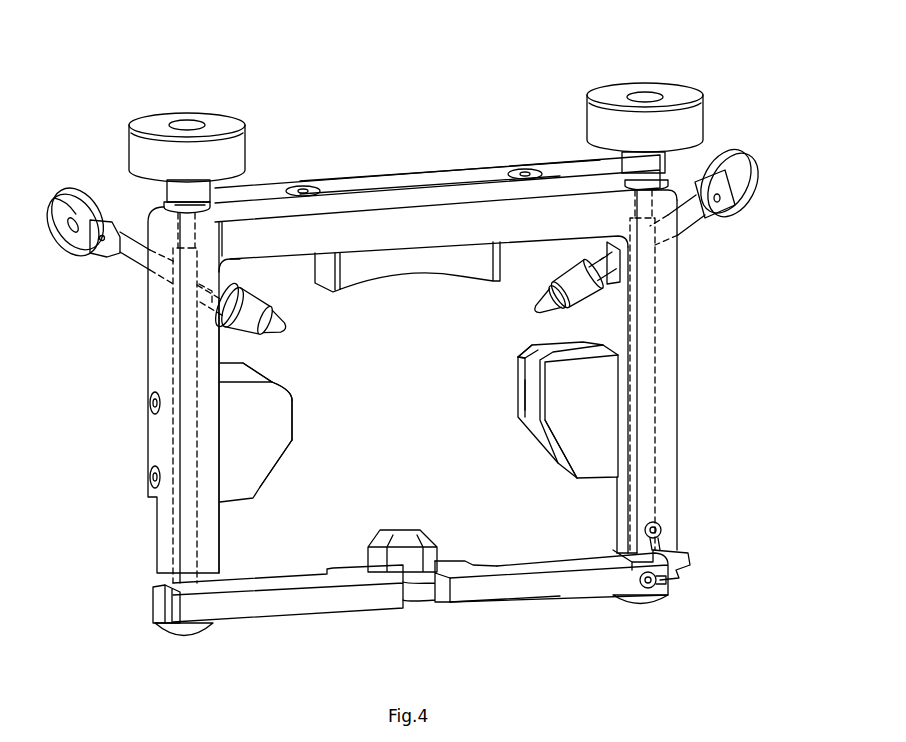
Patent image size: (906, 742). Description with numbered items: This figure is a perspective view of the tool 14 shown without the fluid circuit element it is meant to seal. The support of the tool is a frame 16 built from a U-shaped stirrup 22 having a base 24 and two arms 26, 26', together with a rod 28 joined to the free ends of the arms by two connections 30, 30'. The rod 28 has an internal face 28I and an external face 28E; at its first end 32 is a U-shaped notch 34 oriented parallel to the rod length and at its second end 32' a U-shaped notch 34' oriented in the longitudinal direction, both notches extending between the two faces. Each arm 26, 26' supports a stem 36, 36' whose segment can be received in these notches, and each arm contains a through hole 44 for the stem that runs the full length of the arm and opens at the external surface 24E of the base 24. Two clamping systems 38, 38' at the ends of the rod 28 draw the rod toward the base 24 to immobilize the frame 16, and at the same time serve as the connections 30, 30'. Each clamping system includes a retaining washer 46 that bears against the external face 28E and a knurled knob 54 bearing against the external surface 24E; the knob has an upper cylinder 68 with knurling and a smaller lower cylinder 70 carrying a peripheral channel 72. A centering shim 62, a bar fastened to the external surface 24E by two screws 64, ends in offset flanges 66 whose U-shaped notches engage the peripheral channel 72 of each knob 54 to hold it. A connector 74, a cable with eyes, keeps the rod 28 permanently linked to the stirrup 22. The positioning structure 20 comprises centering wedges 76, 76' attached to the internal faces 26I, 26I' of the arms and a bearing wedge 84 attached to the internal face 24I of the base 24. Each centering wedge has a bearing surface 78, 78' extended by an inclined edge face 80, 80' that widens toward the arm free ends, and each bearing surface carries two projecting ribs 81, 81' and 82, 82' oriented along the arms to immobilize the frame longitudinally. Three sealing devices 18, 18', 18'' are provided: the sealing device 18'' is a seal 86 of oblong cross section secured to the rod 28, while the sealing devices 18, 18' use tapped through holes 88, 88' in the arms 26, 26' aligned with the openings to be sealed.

The tool 14 is at (285, 120).
The frame 16 is at (668, 198).
The sealing device 18 is at (119, 235).
The sealing device 18' is at (716, 195).
The sealing device 18'' is at (425, 486).
The positioning structure 20 is at (406, 330).
The U-shaped stirrup 22 is at (368, 176).
The base 24 is at (417, 212).
The external surface of the base 24E is at (273, 215).
The internal face of the base 24I is at (256, 262).
The first arm 26 is at (148, 395).
The second arm 26' is at (686, 371).
The internal face of the first arm 26I is at (248, 436).
The internal face of the second arm 26I' is at (585, 515).
The rod 28 is at (468, 600).
The internal face of the rod 28I is at (498, 568).
The external face of the rod 28E is at (510, 602).
The connection 30 is at (92, 624).
The connection 30' is at (707, 630).
The first end of the rod 32 is at (288, 620).
The second end of the rod 32' is at (559, 602).
The U-shaped notch 34 is at (141, 588).
The U-shaped notch 34' is at (615, 543).
The stem 36 is at (134, 599).
The stem 36' is at (693, 534).
The clamping system 38 is at (158, 124).
The clamping system 38' is at (665, 103).
The through hole 44 is at (187, 333).
The retaining washer 46 is at (163, 627).
The knurled knob 54 is at (204, 117).
The centering shim 62 is at (343, 182).
The screws 64 is at (303, 186).
The flange 66 is at (212, 190).
The upper cylinder 68 is at (131, 130).
The lower cylinder 70 is at (167, 186).
The peripheral channel 72 is at (166, 198).
The connector 74 is at (690, 562).
The centering wedge 76 is at (271, 436).
The centering wedge 76' is at (549, 410).
The bearing surface 78 is at (301, 379).
The bearing surface 78' is at (501, 345).
The inclined edge face 80 is at (292, 463).
The inclined edge face 80' is at (538, 449).
The rib 81 is at (318, 423).
The rib 81' is at (504, 399).
The rib 82 is at (275, 358).
The rib 82' is at (493, 374).
The bearing wedge 84 is at (448, 262).
The seal 86 is at (418, 558).
The through hole 88 is at (191, 309).
The through hole 88' is at (632, 281).